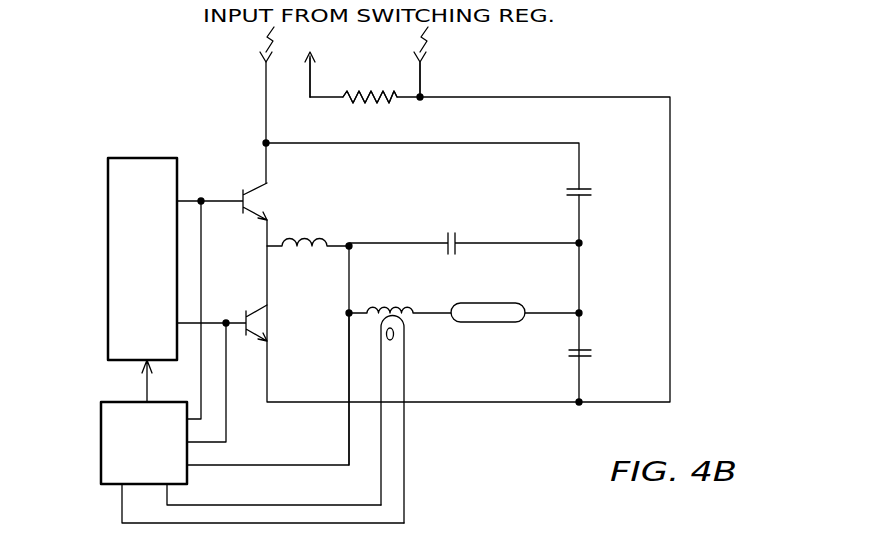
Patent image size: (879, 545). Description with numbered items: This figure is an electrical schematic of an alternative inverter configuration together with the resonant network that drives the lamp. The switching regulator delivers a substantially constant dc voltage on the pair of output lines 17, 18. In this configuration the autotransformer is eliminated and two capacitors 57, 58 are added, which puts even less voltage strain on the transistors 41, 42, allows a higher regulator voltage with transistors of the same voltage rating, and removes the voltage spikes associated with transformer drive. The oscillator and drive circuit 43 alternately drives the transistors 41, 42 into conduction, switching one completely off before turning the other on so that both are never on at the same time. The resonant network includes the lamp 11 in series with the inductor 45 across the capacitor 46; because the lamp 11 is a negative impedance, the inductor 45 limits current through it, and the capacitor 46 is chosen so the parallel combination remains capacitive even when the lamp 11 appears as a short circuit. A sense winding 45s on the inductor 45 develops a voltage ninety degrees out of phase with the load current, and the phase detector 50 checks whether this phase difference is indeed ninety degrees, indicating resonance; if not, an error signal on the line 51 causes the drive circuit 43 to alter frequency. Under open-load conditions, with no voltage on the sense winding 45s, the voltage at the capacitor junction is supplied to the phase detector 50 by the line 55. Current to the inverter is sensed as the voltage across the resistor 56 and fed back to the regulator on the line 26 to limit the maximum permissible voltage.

The output line 17 is at (266, 88).
The output line 18 is at (422, 72).
The line 26 is at (312, 78).
The resistor 56 is at (388, 100).
The oscillator and drive circuit 43 is at (108, 271).
The transistor 42 is at (243, 193).
The transistor 41 is at (246, 312).
The capacitor 46 is at (457, 221).
The capacitor 57 is at (593, 193).
The capacitor 58 is at (592, 356).
The inductor 45 is at (388, 303).
The sense winding 45s is at (392, 344).
The lamp 11 is at (487, 320).
The line 55 is at (349, 381).
The line 51 is at (147, 388).
The phase detector 50 is at (101, 452).